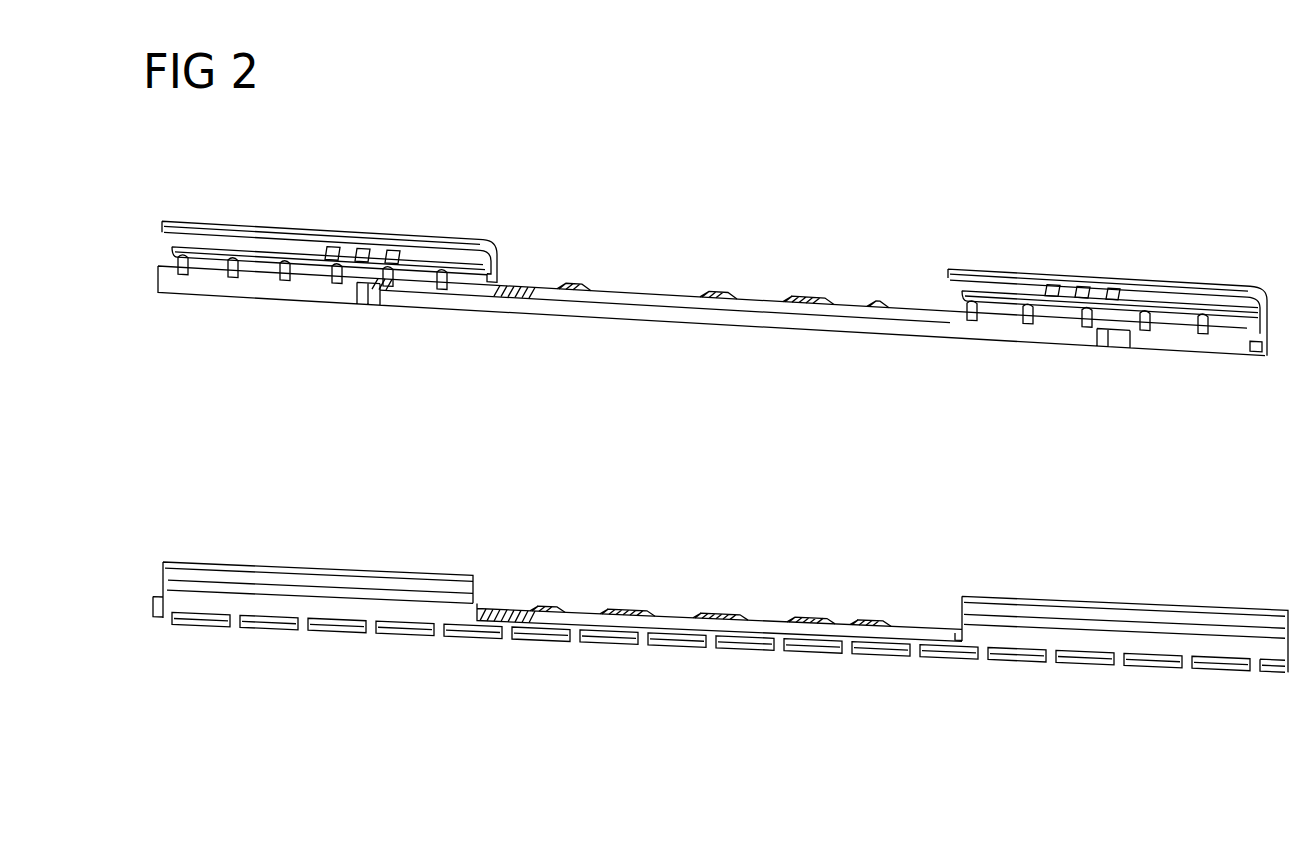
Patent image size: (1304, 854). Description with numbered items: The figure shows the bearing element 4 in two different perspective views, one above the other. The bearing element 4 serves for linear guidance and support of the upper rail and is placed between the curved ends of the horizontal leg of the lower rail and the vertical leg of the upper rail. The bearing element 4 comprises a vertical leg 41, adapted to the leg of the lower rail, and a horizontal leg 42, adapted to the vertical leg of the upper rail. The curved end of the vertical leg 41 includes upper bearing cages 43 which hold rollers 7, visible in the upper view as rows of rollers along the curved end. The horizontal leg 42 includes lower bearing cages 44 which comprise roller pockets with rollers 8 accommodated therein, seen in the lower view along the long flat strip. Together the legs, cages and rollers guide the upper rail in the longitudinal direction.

The bearing element 4 is at (823, 287).
The rollers 7 is at (393, 248).
The rollers 8 is at (915, 630).
The vertical leg 41 is at (462, 238).
The horizontal leg 42 is at (1205, 343).
The upper bearing cages 43 is at (348, 570).
The lower bearing cages 44 is at (447, 293).